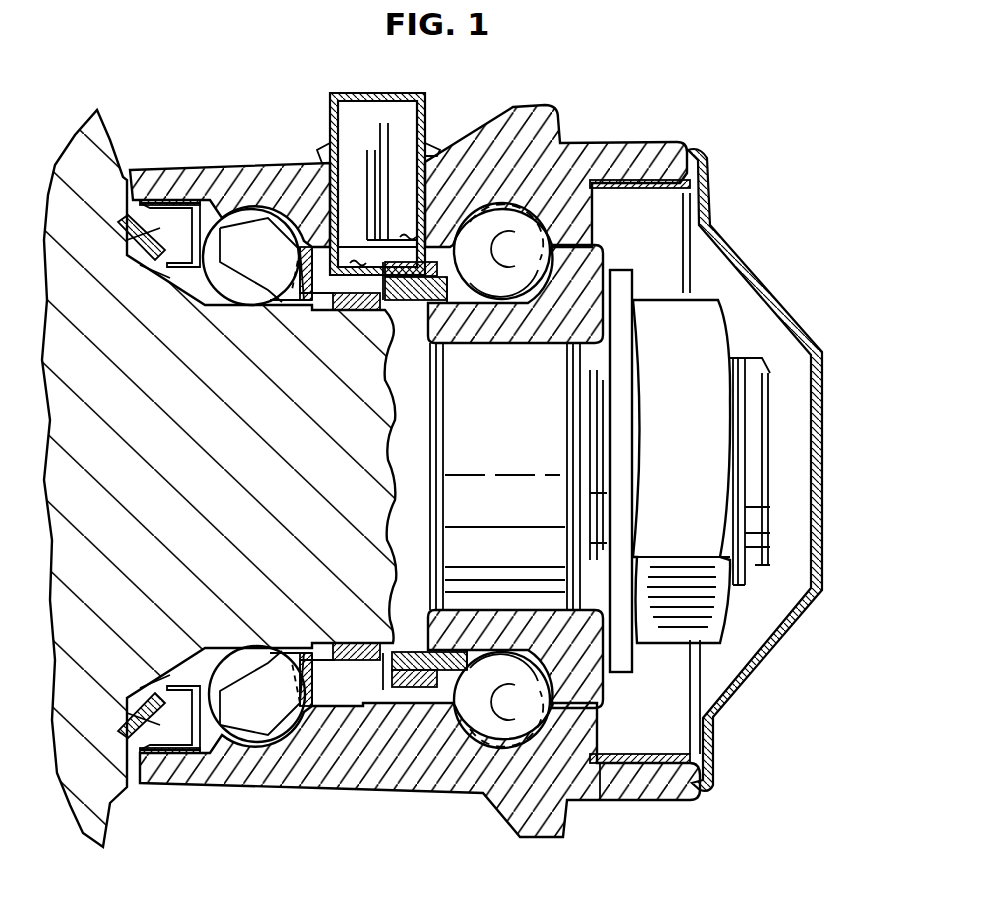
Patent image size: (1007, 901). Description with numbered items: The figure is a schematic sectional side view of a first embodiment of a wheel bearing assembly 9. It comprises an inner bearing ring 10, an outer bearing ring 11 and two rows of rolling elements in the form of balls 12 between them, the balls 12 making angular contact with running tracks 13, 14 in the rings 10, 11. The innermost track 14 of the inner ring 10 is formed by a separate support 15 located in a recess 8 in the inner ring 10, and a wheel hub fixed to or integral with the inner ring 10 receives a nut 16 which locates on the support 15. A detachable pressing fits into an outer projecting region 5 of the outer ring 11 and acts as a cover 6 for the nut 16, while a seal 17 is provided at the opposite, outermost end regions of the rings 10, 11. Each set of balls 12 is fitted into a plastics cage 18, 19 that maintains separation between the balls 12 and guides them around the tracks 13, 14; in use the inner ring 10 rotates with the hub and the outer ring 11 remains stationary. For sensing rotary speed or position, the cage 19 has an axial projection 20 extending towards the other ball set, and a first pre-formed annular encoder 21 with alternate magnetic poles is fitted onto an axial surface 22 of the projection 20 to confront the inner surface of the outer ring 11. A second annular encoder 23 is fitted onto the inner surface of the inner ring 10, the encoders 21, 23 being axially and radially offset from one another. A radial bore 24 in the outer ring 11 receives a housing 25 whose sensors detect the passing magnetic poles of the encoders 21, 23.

The outer projecting region 5 is at (657, 780).
The cover 6 is at (767, 660).
The recess 8 is at (500, 607).
The wheel bearing assembly 9 is at (704, 118).
The inner bearing ring 10 is at (90, 770).
The outer bearing ring 11 is at (527, 122).
The balls 12 is at (263, 217).
The running track 13 is at (230, 220).
The running track 14 is at (217, 293).
The support 15 is at (592, 252).
The nut 16 is at (683, 333).
The seal 17 is at (157, 235).
The cage 18 is at (260, 262).
The cage 19 is at (460, 627).
The axial projection 20 is at (405, 645).
The first annular encoder 21 is at (407, 300).
The axial surface 22 is at (462, 320).
The second annular encoder 23 is at (340, 640).
The radial bore 24 is at (320, 190).
The housing 25 is at (375, 95).